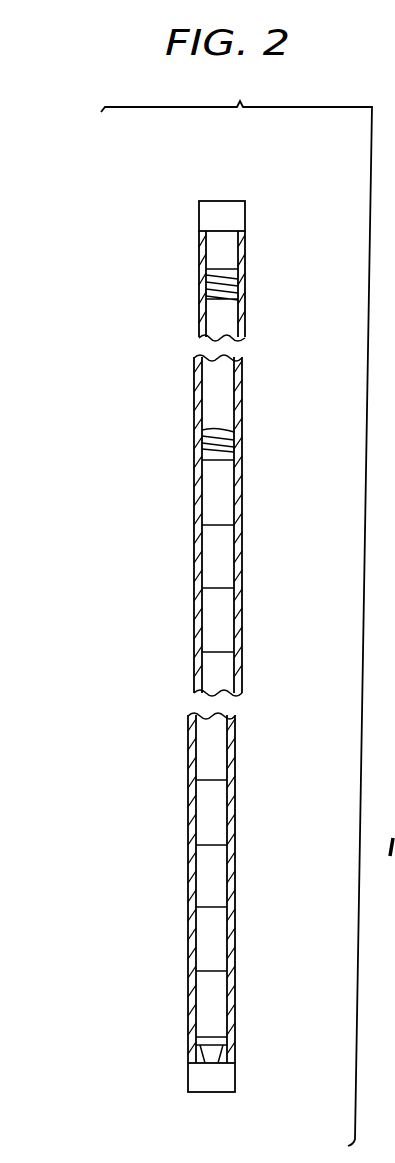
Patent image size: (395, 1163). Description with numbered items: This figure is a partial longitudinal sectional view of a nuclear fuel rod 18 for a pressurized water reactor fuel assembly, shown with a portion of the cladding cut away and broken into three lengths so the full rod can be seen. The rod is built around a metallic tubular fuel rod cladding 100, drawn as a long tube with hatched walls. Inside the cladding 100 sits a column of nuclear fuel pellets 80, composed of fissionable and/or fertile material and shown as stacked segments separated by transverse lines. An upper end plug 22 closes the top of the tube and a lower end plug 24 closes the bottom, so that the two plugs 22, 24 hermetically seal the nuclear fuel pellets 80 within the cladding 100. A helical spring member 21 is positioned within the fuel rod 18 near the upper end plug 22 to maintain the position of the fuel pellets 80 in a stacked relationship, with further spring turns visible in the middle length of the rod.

The nuclear fuel rod 18 is at (274, 387).
The helical spring member 21 is at (214, 315).
The upper end plug 22 is at (240, 219).
The lower end plug 24 is at (202, 1078).
The nuclear fuel pellets 80 is at (208, 505).
The metallic tubular fuel rod cladding 100 is at (189, 819).